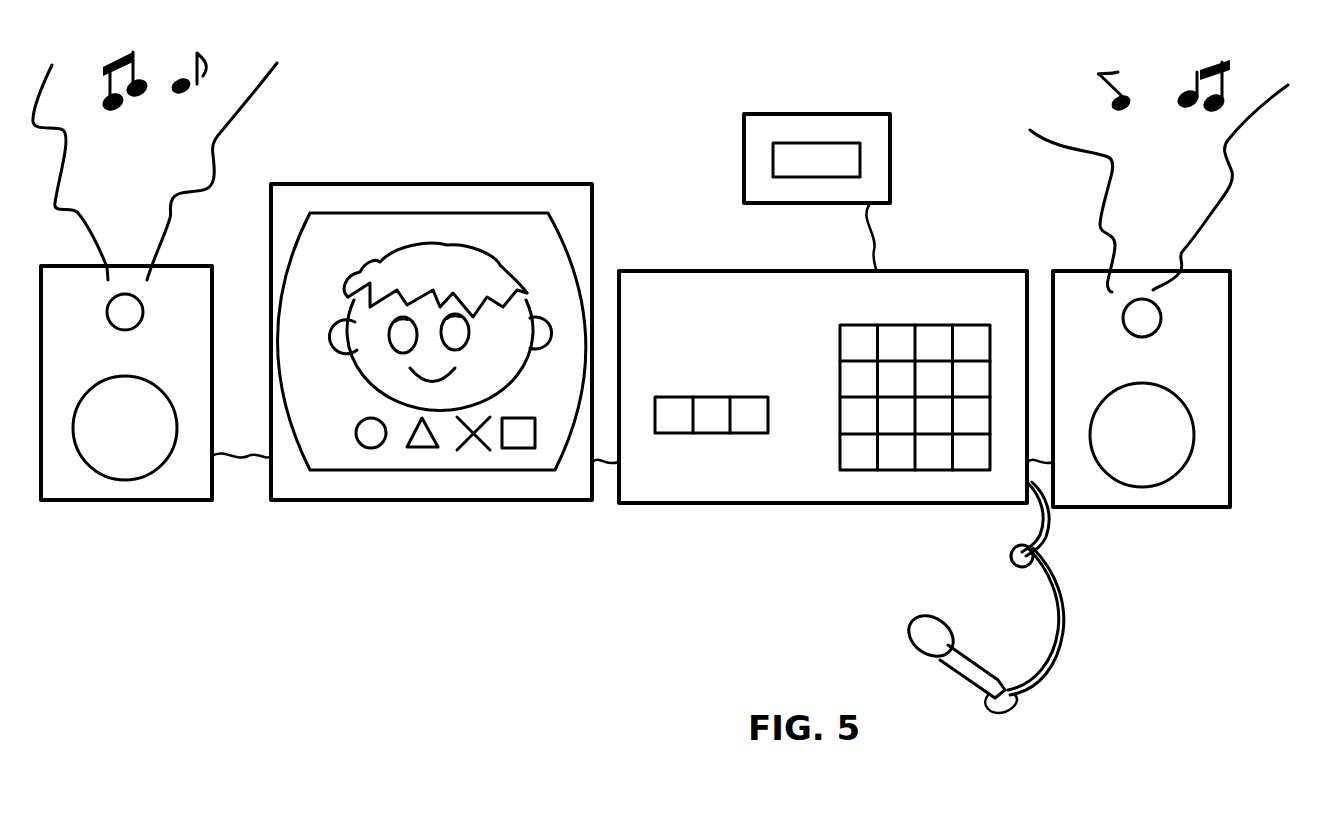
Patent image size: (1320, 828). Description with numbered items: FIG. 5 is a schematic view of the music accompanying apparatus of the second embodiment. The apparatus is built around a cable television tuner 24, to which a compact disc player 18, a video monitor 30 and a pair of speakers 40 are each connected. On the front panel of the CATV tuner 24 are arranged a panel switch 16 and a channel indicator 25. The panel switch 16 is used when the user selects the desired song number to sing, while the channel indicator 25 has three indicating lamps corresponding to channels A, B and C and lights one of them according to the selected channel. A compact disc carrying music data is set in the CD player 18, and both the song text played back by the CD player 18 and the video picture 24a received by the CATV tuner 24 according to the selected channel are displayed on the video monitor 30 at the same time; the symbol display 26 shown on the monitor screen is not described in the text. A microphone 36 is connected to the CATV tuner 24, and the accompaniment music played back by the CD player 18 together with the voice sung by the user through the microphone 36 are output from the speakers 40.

The panel switch 16 is at (972, 458).
The compact disc player 18 is at (830, 133).
The cable television tuner 24 is at (668, 480).
The video picture 24a is at (452, 276).
The channel indicator 25 is at (655, 413).
The symbol buttons 26 is at (368, 436).
The video monitor 30 is at (465, 487).
The microphone 36 is at (1030, 697).
The speakers 40 is at (178, 484).